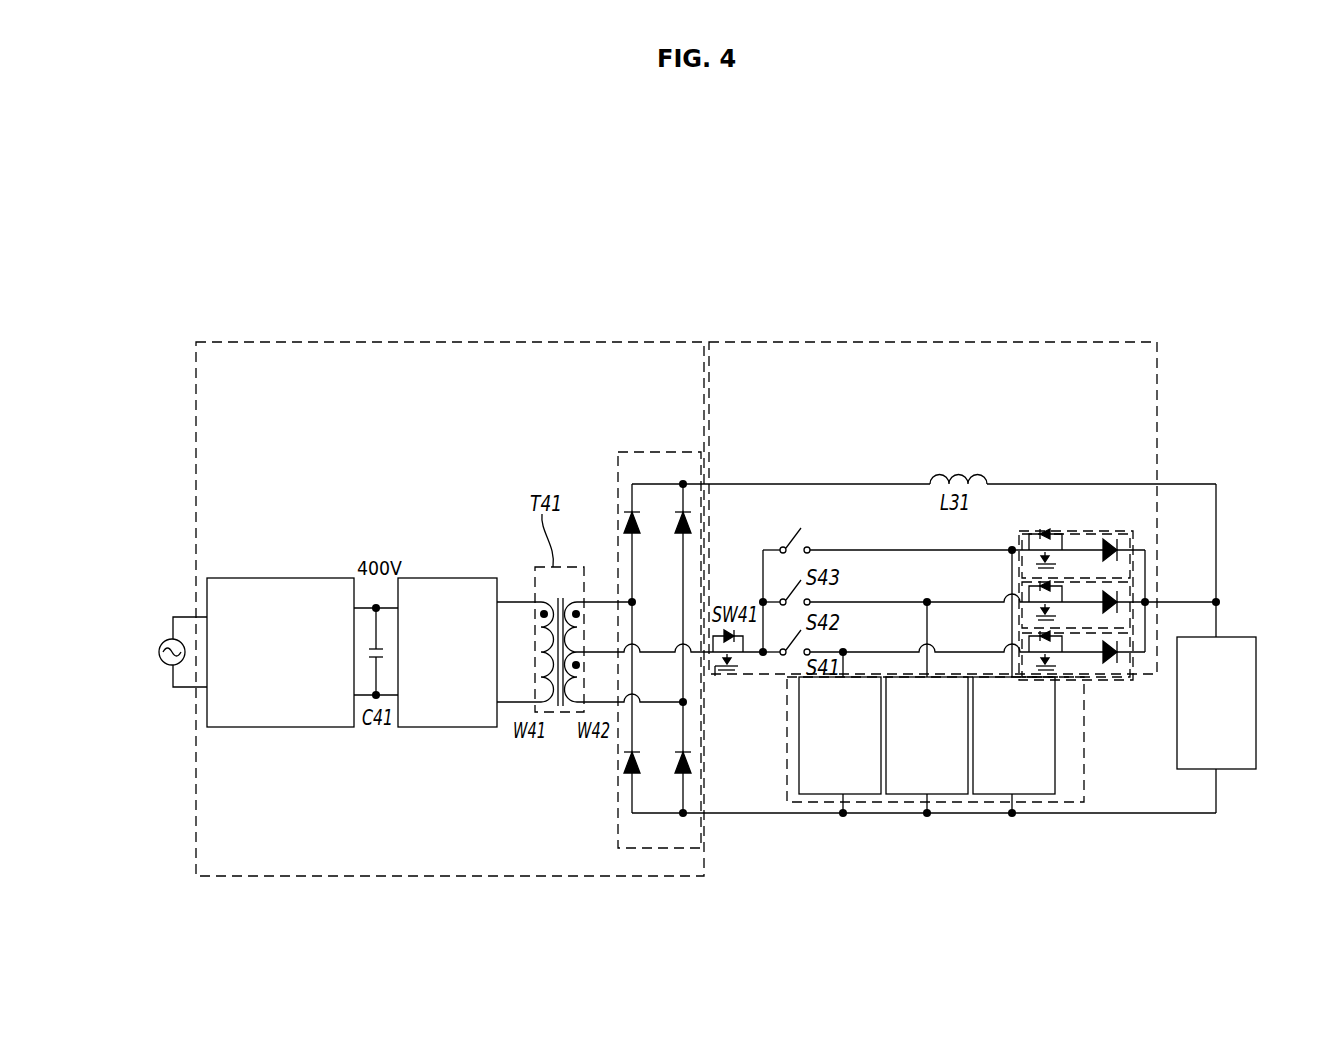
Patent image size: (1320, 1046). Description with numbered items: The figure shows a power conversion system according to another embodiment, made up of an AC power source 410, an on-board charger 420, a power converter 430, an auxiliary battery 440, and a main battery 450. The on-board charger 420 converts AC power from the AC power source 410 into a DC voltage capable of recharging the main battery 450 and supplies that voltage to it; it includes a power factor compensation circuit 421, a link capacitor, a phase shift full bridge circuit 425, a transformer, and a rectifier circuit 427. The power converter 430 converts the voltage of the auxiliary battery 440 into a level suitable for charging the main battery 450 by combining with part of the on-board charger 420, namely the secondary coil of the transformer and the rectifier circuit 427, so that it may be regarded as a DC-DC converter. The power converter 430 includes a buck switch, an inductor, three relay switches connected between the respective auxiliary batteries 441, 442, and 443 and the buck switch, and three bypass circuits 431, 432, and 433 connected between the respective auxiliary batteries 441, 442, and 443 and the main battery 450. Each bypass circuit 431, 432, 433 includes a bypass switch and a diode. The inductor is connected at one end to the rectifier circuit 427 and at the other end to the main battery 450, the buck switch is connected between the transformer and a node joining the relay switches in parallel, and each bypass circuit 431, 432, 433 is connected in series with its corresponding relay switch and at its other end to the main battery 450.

The AC power source 410 is at (163, 635).
The on-board charger 420 is at (467, 341).
The power factor compensation circuit 421 is at (305, 577).
The phase shift full bridge (PSFB) circuit 425 is at (443, 577).
The rectifier circuit 427 is at (634, 450).
The power converter 430 is at (947, 341).
The bypass circuit 431 is at (1133, 660).
The bypass circuit 432 is at (1135, 586).
The bypass circuit 433 is at (1080, 530).
The auxiliary battery 440 is at (1064, 803).
The auxiliary battery 441 is at (823, 796).
The auxiliary battery 442 is at (913, 796).
The auxiliary battery 443 is at (993, 796).
The main battery 450 is at (1242, 636).